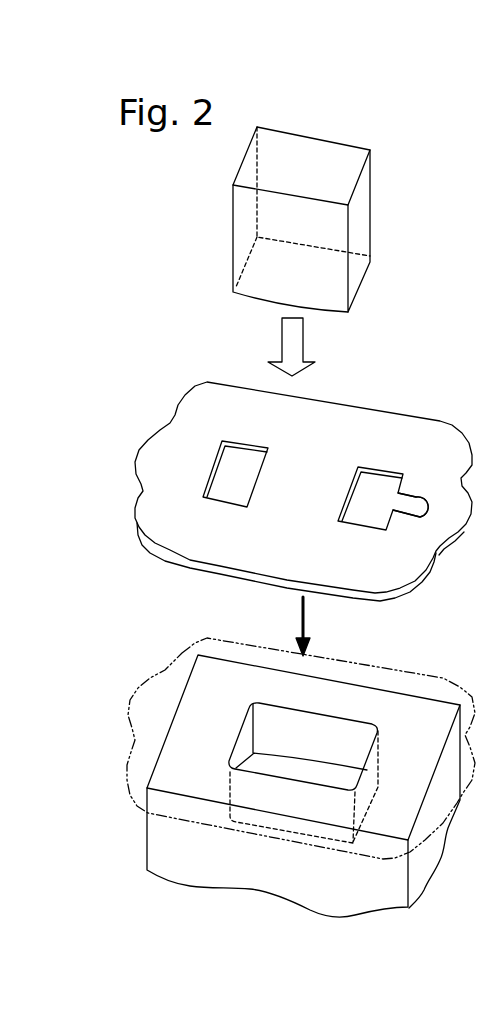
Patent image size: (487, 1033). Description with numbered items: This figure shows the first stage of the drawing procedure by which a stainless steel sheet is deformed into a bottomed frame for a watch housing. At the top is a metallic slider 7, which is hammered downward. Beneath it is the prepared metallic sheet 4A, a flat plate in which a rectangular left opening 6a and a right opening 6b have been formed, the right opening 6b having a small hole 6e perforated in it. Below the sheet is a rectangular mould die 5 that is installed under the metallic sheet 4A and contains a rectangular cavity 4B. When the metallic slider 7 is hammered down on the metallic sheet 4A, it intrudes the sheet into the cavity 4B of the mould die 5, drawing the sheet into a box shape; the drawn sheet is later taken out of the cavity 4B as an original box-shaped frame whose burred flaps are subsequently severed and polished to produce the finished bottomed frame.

The metallic slider 7 is at (363, 224).
The metallic sheet 4A is at (309, 409).
The rectangular left opening 6a is at (220, 465).
The right opening 6b is at (357, 483).
The small hole 6e is at (410, 492).
The rectangular mould die 5 is at (417, 720).
The rectangular cavity 4B is at (287, 722).